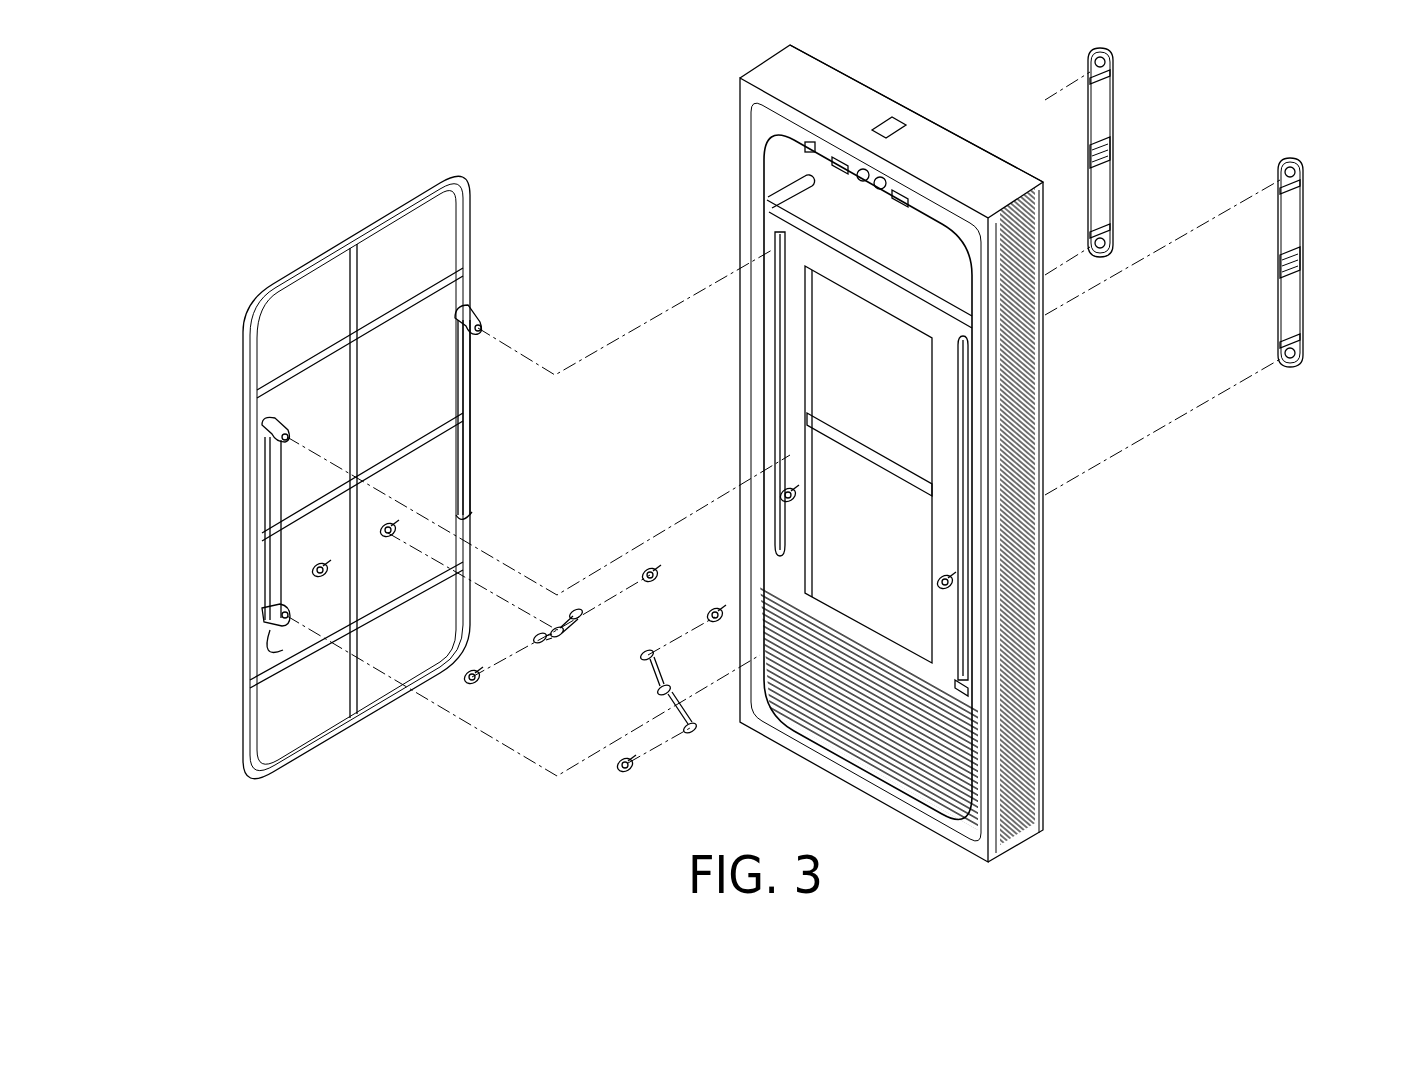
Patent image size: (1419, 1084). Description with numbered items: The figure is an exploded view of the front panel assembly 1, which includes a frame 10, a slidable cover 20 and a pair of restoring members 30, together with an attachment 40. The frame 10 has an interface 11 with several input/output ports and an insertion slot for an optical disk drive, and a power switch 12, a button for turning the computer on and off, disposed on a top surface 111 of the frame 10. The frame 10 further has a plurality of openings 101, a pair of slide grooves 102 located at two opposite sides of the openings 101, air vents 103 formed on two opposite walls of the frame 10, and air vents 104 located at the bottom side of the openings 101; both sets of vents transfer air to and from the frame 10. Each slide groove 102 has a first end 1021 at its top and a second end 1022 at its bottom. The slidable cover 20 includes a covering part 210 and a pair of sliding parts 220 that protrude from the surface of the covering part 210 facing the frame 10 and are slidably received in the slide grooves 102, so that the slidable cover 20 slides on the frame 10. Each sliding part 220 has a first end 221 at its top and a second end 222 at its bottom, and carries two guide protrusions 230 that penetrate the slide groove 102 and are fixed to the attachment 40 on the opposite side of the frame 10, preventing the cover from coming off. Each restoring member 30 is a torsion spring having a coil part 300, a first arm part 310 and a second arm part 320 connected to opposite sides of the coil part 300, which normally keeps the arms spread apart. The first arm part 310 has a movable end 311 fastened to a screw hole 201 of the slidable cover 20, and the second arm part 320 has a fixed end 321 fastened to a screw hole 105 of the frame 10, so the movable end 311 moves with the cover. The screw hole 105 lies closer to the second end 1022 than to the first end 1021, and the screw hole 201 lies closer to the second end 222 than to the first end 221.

The front panel assembly 1 is at (174, 92).
The frame 10 is at (855, 62).
The interface 11 is at (755, 133).
The power switch 12 is at (897, 126).
The slidable cover 20 is at (140, 352).
The restoring member 30 is at (590, 652).
The attachment 40 is at (1312, 243).
The openings 101 is at (843, 386).
The slide grooves 102 is at (905, 462).
The air vents 103 is at (1033, 793).
The air vents 104 is at (840, 758).
The screw hole 105 is at (945, 590).
The top surface 111 is at (990, 188).
The screw hole 201 is at (327, 585).
The covering part 210 is at (258, 355).
The sliding parts 220 is at (262, 572).
The first end 221 is at (263, 414).
The second end 222 is at (262, 618).
The guide protrusions 230 is at (280, 650).
The coil part 300 is at (690, 730).
The first arm part 310 is at (640, 700).
The movable end 311 is at (648, 650).
The second arm part 320 is at (655, 750).
The fixed end 321 is at (690, 735).
The first end 1021 is at (962, 340).
The second end 1022 is at (1000, 705).